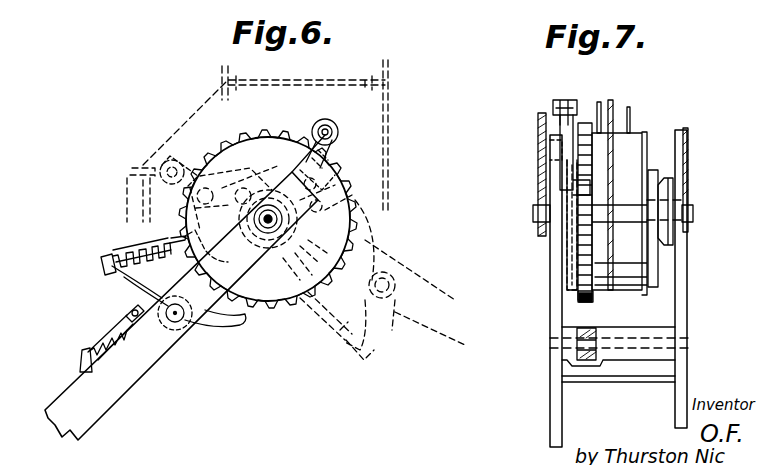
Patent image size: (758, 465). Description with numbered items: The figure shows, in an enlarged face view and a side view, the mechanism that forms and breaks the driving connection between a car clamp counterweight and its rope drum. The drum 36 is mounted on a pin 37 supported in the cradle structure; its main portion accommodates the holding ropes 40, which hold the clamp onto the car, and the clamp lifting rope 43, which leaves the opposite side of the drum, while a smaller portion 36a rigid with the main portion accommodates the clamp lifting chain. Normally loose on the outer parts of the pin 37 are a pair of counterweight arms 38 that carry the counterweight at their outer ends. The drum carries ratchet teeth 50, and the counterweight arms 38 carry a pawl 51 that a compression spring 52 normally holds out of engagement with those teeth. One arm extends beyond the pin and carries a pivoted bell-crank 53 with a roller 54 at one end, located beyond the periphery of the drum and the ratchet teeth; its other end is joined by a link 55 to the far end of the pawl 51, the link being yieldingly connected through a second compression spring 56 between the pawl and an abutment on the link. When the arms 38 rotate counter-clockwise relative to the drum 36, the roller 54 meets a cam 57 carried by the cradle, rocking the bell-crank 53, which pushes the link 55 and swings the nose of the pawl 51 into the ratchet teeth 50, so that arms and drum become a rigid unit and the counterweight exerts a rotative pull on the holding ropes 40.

In FIG. 6, the drum 36 is at (277, 297).
In FIG. 7, the smaller portion of the drum 36a is at (662, 182).
In FIG. 6, the pin 37 is at (268, 219).
In FIG. 7, the pin 37 is at (533, 216).
In FIG. 6, the counterweight arms 38 is at (152, 362).
In FIG. 7, the counterweight arms 38 is at (550, 300).
In FIG. 7, the holding ropes 40 is at (598, 100).
In FIG. 7, the clamp lifting rope 43 is at (637, 213).
In FIG. 6, the ratchet teeth 50 is at (337, 326).
In FIG. 7, the ratchet teeth 50 is at (578, 298).
In FIG. 6, the pawl 51 is at (230, 332).
In FIG. 7, the pawl 51 is at (592, 330).
In FIG. 6, the compression spring 52 is at (118, 324).
In FIG. 6, the bell-crank 53 is at (335, 150).
In FIG. 7, the bell-crank 53 is at (545, 128).
In FIG. 6, the roller 54 is at (330, 124).
In FIG. 7, the roller 54 is at (560, 100).
In FIG. 6, the link 55 is at (208, 238).
In FIG. 7, the link 55 is at (567, 268).
In FIG. 6, the compression spring 56 is at (124, 248).
In FIG. 6, the cam 57 is at (132, 172).